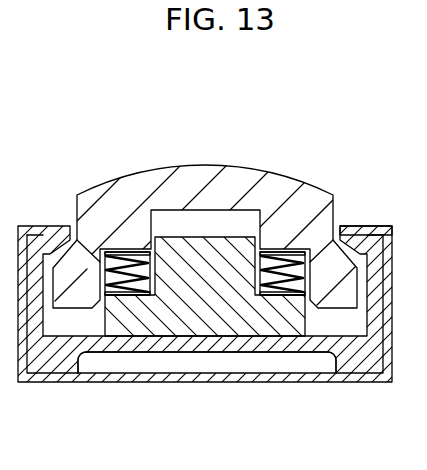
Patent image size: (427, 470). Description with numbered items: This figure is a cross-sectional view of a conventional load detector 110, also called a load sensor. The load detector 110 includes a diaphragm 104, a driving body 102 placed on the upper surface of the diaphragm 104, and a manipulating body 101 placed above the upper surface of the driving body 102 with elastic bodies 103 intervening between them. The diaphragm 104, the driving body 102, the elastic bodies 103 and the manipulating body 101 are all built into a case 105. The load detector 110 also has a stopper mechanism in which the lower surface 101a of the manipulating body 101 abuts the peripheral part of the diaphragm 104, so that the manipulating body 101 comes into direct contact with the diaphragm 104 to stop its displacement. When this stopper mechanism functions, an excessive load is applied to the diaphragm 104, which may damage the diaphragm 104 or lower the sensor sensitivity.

The load detector 110 is at (78, 108).
The manipulating body 101 is at (283, 183).
The lower surface of the manipulating body 101a is at (67, 309).
The driving body 102 is at (205, 246).
The elastic bodies 103 is at (124, 252).
The diaphragm 104 is at (170, 367).
The case 105 is at (367, 230).